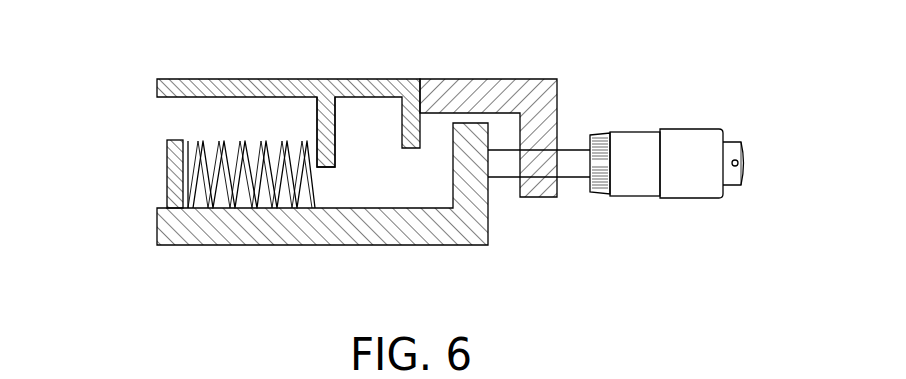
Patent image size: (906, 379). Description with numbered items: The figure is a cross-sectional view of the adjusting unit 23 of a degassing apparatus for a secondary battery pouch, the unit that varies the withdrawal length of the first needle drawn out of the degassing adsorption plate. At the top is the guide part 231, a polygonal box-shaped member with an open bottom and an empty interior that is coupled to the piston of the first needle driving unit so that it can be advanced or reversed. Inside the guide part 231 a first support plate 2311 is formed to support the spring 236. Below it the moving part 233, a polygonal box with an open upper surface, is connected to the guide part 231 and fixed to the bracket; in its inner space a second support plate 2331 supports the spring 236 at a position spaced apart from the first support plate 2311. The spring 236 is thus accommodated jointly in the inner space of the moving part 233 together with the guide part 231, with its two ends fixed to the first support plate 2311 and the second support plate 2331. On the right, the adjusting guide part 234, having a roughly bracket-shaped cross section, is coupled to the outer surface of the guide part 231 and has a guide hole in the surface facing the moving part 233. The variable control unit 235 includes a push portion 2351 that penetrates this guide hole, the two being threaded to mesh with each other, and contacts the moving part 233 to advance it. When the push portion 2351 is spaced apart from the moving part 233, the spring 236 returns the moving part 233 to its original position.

The adjusting unit 23 is at (409, 169).
The guide part 231 is at (311, 79).
The first support plate 2311 is at (317, 123).
The moving part 233 is at (223, 229).
The second support plate 2331 is at (167, 180).
The adjusting guide part 234 is at (500, 79).
The push portion 2351 is at (571, 150).
The variable control unit 235 is at (633, 132).
The spring 236 is at (282, 181).